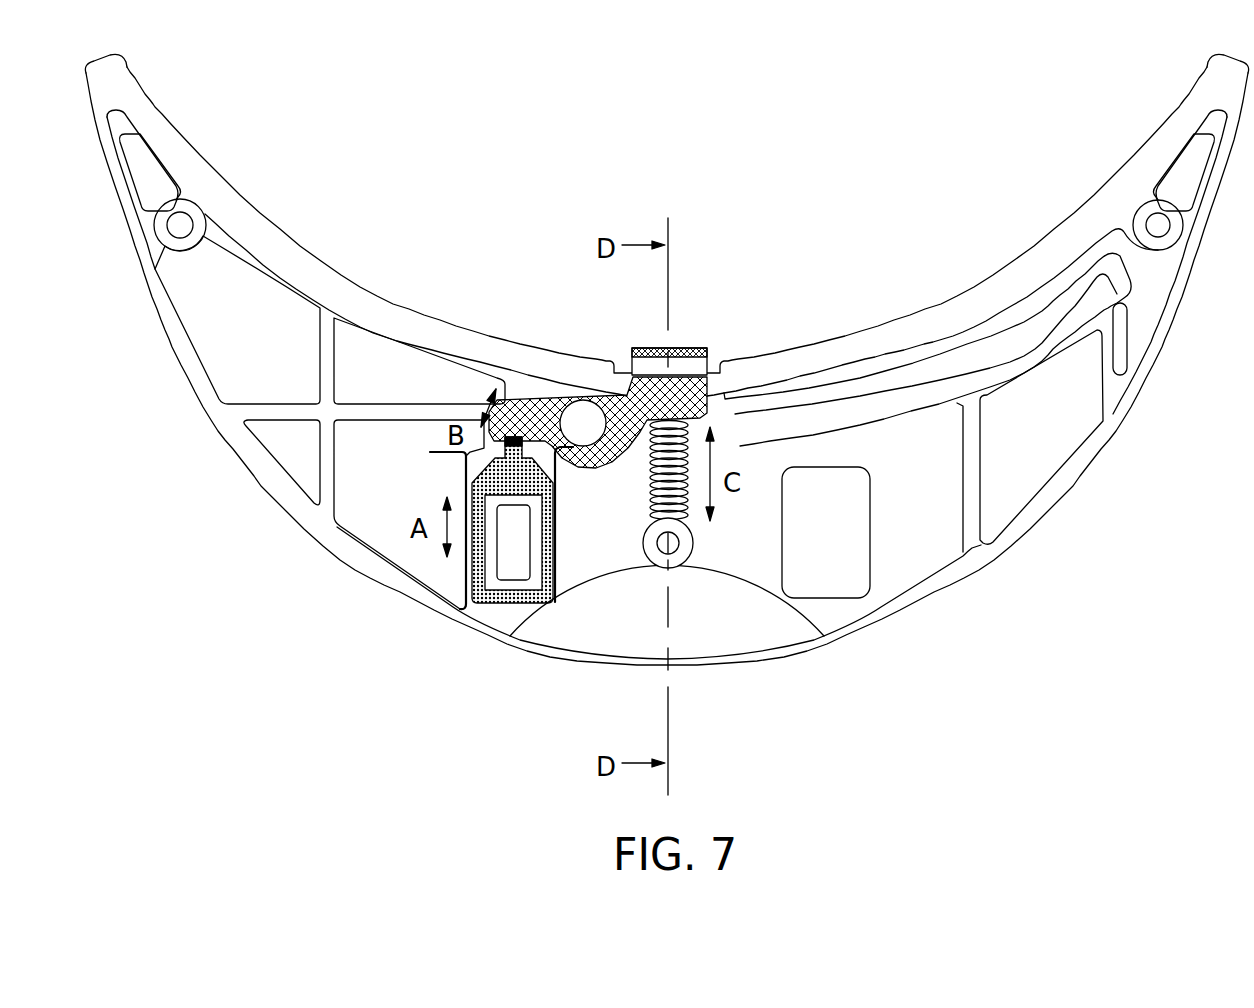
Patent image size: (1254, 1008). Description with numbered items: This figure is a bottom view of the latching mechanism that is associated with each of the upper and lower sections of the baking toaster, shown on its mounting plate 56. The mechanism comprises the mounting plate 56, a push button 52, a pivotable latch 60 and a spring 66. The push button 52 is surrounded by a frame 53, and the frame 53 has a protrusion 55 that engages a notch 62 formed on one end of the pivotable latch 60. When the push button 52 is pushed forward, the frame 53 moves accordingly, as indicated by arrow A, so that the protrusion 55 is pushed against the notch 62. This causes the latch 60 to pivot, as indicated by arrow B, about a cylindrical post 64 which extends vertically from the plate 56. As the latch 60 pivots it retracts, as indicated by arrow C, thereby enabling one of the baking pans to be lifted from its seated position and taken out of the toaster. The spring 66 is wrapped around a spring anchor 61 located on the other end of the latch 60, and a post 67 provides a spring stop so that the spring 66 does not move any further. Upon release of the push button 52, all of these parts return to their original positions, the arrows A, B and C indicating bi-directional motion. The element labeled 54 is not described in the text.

The push button 52 is at (495, 604).
The frame 53 is at (523, 604).
The receptacle window 54 is at (850, 580).
The protrusion 55 is at (470, 450).
The mounting plate 56 is at (1022, 638).
The pivotable latch 60 is at (632, 362).
The spring anchor 61 is at (731, 400).
The notch 62 is at (484, 436).
The cylindrical post 64 is at (583, 422).
The spring 66 is at (688, 520).
The post 67 is at (660, 550).